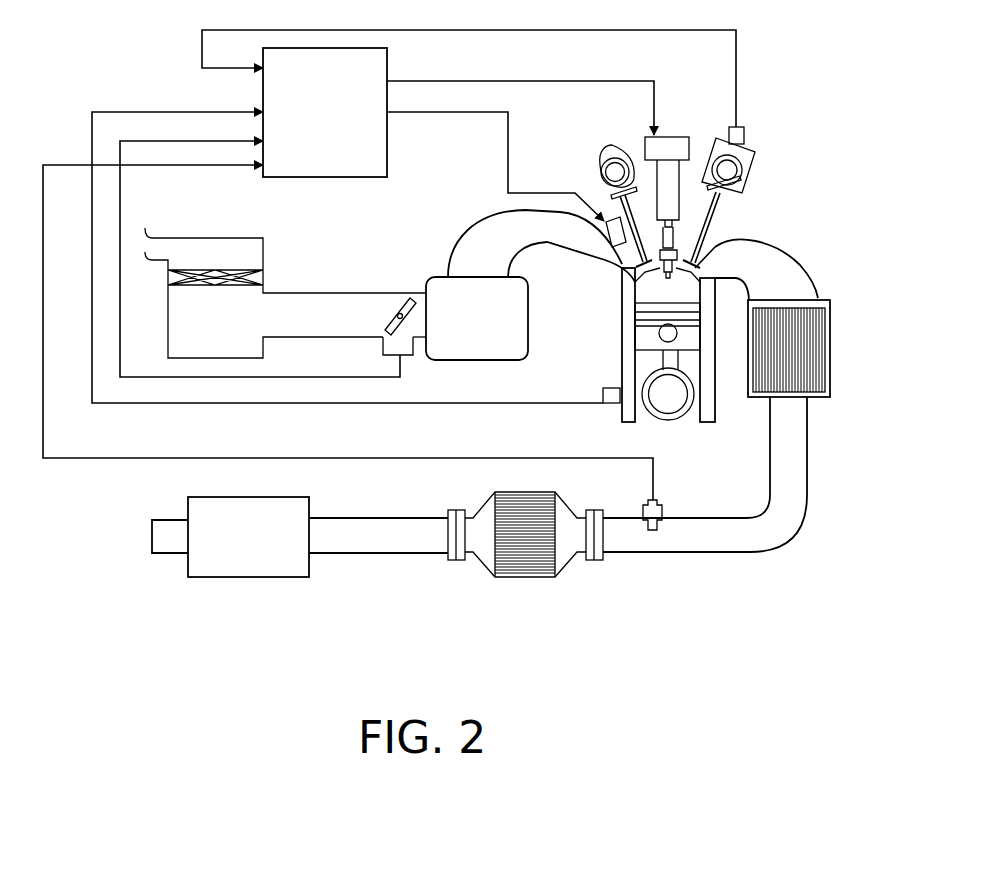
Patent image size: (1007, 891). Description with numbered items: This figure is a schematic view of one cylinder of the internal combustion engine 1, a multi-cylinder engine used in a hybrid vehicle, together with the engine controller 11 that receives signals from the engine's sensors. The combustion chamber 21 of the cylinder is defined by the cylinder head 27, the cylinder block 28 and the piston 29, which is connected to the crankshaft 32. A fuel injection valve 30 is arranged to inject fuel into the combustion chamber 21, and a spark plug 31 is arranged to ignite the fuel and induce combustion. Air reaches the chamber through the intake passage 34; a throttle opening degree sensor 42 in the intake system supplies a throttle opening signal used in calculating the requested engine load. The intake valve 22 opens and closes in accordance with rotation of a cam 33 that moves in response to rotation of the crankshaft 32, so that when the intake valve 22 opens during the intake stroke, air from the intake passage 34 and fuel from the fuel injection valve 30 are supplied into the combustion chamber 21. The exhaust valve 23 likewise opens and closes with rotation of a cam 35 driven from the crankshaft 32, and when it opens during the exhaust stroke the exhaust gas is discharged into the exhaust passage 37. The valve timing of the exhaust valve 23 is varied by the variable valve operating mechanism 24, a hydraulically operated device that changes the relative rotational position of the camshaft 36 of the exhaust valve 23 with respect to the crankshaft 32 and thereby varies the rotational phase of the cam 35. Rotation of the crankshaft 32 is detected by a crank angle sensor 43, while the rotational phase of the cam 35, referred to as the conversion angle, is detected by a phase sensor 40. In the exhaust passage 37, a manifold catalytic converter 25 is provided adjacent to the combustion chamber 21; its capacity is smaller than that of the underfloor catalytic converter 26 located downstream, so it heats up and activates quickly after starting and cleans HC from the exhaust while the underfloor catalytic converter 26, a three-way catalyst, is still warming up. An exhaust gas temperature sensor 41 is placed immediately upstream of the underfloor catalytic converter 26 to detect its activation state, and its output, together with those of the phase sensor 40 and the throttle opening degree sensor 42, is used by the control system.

The internal combustion engine 1 is at (816, 100).
The engine controller 11 is at (380, 148).
The combustion chamber 21 is at (650, 290).
The intake valve 22 is at (636, 205).
The exhaust valve 23 is at (722, 213).
The variable valve operating mechanism 24 is at (748, 145).
The manifold catalytic converter 25 is at (825, 325).
The underfloor catalytic converter 26 is at (533, 572).
The cylinder head 27 is at (716, 233).
The cylinder block 28 is at (628, 344).
The piston 29 is at (643, 317).
The fuel injection valve 30 is at (606, 248).
The spark plug 31 is at (700, 233).
The crankshaft 32 is at (668, 402).
The cam 33 is at (607, 158).
The intake passage 34 is at (557, 258).
The cam 35 is at (740, 152).
The camshaft 36 is at (715, 160).
The exhaust passage 37 is at (815, 292).
The phase sensor 40 is at (745, 132).
The exhaust gas temperature sensor 41 is at (643, 512).
The throttle opening degree sensor 42 is at (405, 357).
The crank angle sensor 43 is at (612, 388).